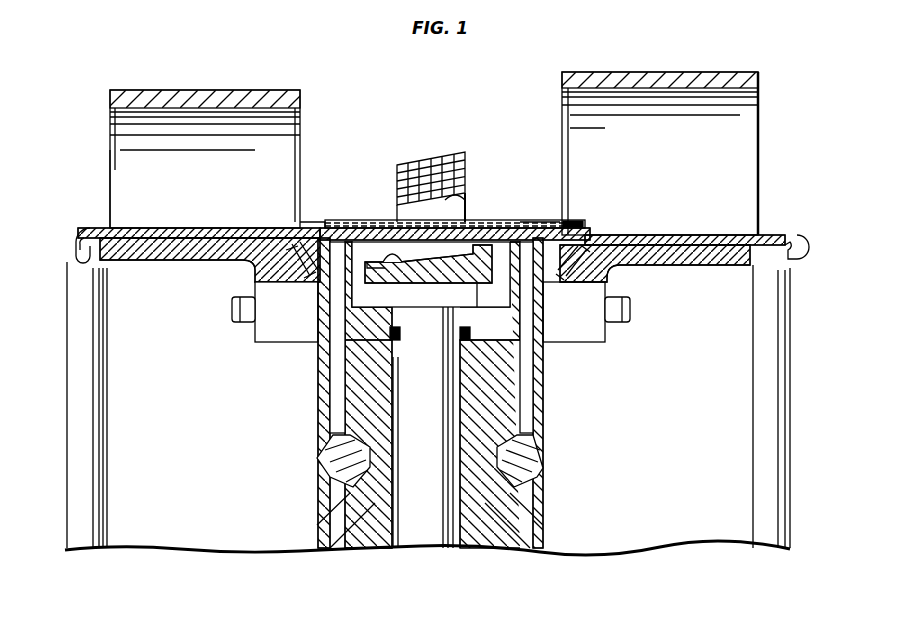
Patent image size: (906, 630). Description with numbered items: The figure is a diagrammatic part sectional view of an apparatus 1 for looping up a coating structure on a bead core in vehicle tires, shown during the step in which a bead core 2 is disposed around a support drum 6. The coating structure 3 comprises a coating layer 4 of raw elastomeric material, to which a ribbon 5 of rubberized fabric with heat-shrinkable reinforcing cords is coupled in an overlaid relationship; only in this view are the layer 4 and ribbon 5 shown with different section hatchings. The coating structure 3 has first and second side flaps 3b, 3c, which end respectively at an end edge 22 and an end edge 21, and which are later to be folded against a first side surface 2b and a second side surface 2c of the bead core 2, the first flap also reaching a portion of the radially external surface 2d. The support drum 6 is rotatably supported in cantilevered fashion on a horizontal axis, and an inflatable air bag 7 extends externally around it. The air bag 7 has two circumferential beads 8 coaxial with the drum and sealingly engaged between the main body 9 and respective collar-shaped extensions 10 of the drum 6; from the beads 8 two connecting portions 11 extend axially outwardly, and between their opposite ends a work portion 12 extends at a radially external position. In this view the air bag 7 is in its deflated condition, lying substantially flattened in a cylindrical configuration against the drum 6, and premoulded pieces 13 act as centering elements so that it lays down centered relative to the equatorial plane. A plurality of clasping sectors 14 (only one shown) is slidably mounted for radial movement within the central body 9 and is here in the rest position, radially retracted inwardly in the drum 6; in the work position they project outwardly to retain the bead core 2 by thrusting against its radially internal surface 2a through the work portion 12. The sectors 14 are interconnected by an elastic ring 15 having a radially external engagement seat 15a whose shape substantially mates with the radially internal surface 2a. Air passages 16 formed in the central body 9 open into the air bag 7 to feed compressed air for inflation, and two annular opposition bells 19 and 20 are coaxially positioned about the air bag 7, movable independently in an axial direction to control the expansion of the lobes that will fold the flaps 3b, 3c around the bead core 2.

The apparatus 1 is at (149, 579).
The bead core 2 is at (434, 160).
The radially internal surface 2a is at (467, 200).
The first side surface 2b is at (397, 180).
The second side surface 2c is at (467, 172).
The radially external surface 2d is at (418, 163).
The coating structure 3 is at (592, 232).
The first side flap 3b is at (345, 222).
The second side flap 3c is at (538, 222).
The coating layer 4 is at (330, 222).
The ribbon 5 is at (372, 222).
The support drum 6 is at (649, 557).
The inflatable air bag 7 is at (686, 235).
The circumferential beads 8 is at (292, 255).
The main body 9 is at (368, 548).
The collar-shaped extensions 10 is at (168, 258).
The connecting portions 11 is at (212, 258).
The work portion 12 is at (156, 189).
The premoulded pieces 13 is at (74, 262).
The clasping sectors 14 is at (600, 305).
The elastic ring 15 is at (478, 296).
The engagement seat 15a is at (382, 290).
The air passages 16 is at (332, 380).
The first opposition bell 19 is at (242, 98).
The second opposition bell 20 is at (700, 82).
The end edge 21 is at (578, 224).
The end edge 22 is at (308, 224).